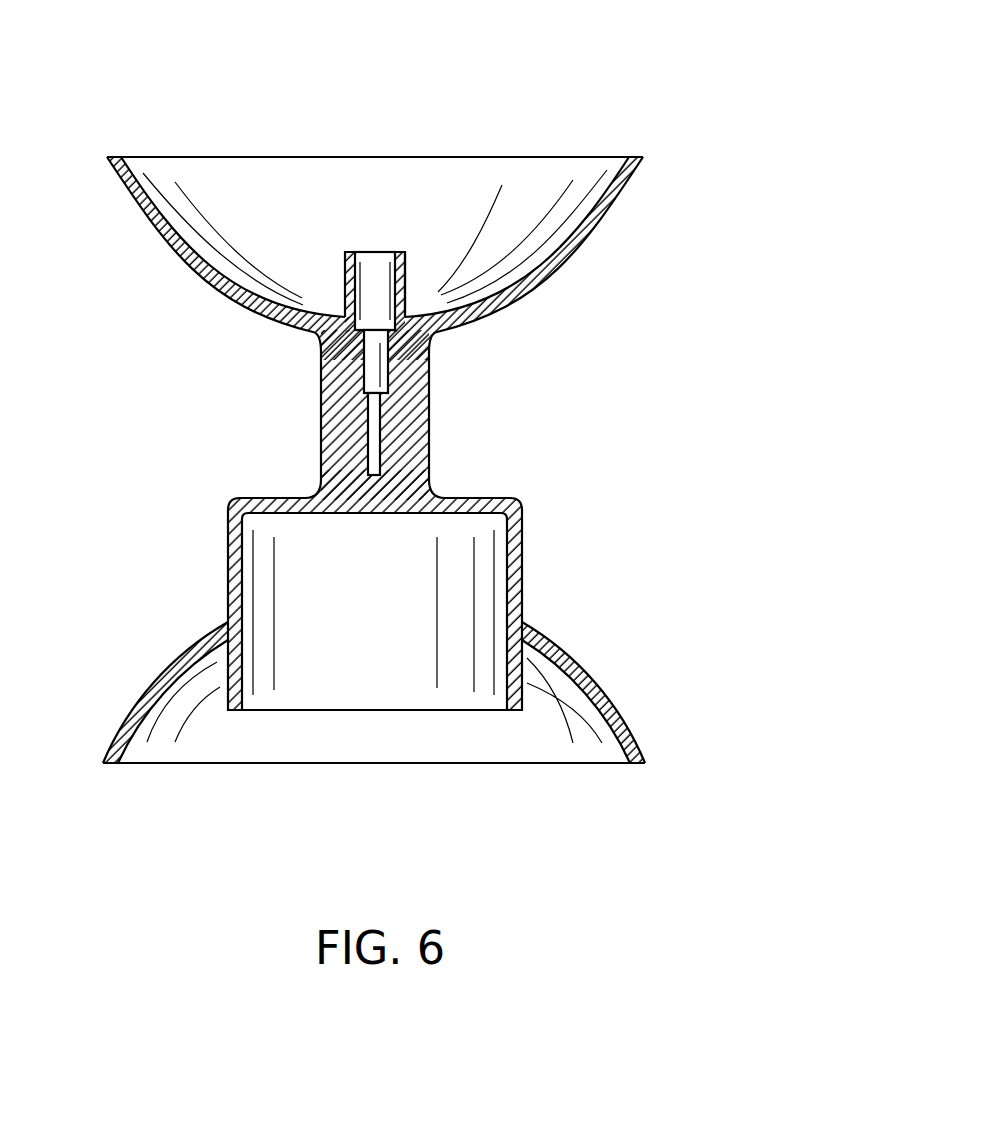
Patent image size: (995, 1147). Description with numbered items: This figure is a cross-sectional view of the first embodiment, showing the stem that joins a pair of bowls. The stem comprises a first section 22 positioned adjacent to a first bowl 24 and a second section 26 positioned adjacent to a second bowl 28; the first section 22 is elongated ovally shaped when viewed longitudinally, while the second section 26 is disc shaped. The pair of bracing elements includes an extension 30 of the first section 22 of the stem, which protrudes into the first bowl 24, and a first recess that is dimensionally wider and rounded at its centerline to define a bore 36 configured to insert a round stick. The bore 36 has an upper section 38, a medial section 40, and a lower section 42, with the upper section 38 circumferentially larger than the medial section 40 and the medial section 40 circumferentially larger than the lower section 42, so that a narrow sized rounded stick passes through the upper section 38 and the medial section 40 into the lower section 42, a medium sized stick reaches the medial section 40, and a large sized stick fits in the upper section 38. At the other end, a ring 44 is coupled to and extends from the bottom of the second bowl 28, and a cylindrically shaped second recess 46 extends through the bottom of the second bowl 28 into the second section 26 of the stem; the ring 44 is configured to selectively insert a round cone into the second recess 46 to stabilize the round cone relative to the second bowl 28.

The first section 22 is at (413, 407).
The first bowl 24 is at (623, 197).
The second section 26 is at (520, 575).
The second bowl 28 is at (622, 715).
The extension 30 is at (408, 276).
The bore 36 is at (374, 250).
The upper section 38 is at (371, 292).
The medial section 40 is at (373, 367).
The lower section 42 is at (373, 452).
The ring 44 is at (523, 682).
The second recess 46 is at (422, 538).